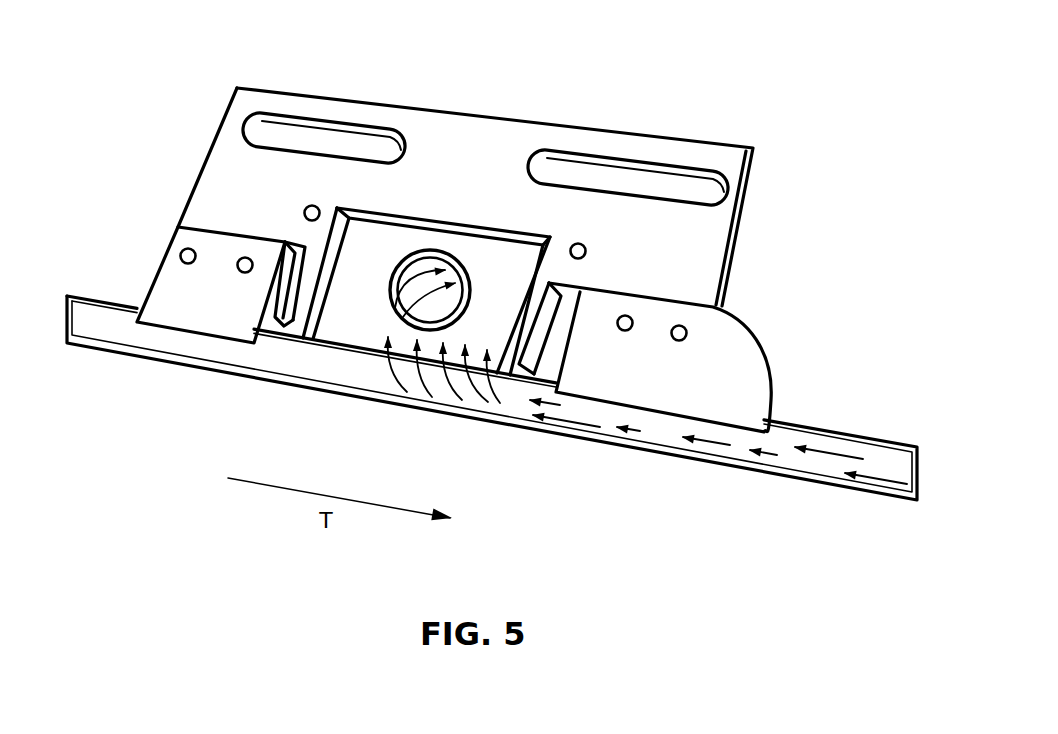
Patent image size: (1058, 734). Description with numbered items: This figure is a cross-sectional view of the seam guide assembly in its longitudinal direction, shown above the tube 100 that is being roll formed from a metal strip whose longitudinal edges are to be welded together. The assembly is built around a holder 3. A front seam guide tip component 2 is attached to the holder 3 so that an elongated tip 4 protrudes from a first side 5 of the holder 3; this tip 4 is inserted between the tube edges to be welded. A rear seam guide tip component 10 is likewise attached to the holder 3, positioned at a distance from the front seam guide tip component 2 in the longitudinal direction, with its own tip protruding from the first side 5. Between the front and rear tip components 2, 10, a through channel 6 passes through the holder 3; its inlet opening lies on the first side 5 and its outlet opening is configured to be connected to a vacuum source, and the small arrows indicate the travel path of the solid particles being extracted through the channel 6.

The front seam guide tip component 2 is at (640, 375).
The holder 3 is at (695, 255).
The elongated tip 4 is at (600, 403).
The first side 5 is at (323, 335).
The through channel 6 is at (418, 267).
The rear seam guide tip component 10 is at (175, 308).
The tube 100 is at (823, 460).